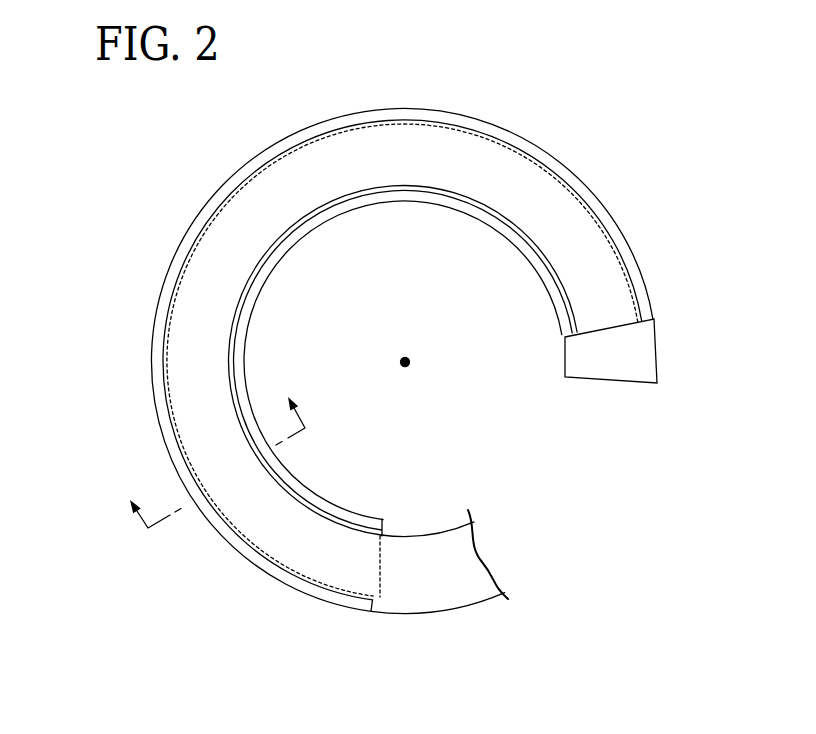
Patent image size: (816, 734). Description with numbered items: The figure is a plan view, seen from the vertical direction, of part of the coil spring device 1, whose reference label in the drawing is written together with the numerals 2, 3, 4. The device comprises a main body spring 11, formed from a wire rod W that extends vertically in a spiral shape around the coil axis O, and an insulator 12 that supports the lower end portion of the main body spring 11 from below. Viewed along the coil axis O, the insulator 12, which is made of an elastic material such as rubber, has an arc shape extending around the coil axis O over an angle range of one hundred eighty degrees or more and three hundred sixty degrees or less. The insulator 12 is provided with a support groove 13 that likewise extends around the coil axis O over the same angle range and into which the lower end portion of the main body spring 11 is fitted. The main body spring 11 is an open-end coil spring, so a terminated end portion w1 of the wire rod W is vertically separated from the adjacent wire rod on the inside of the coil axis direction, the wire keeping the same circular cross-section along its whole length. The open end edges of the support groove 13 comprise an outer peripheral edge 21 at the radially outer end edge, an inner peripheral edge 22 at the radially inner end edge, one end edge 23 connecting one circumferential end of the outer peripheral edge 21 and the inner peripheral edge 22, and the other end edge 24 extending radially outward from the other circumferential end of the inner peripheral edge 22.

The coil spring device 1 is at (397, 362).
The gasket / ring assembly 2 is at (397, 362).
The gasket / ring assembly 3 is at (397, 362).
The gasket / ring assembly 4 is at (578, 125).
The main body spring 11 is at (420, 616).
The insulator 12 is at (136, 353).
The support groove 13 is at (187, 297).
The outer peripheral edge 21 is at (260, 556).
The inner peripheral edge 22 is at (320, 208).
The one end edge 23 is at (378, 565).
The other end edge 24 is at (608, 322).
The terminated end portion w1 is at (448, 120).
The coil axis O is at (410, 364).